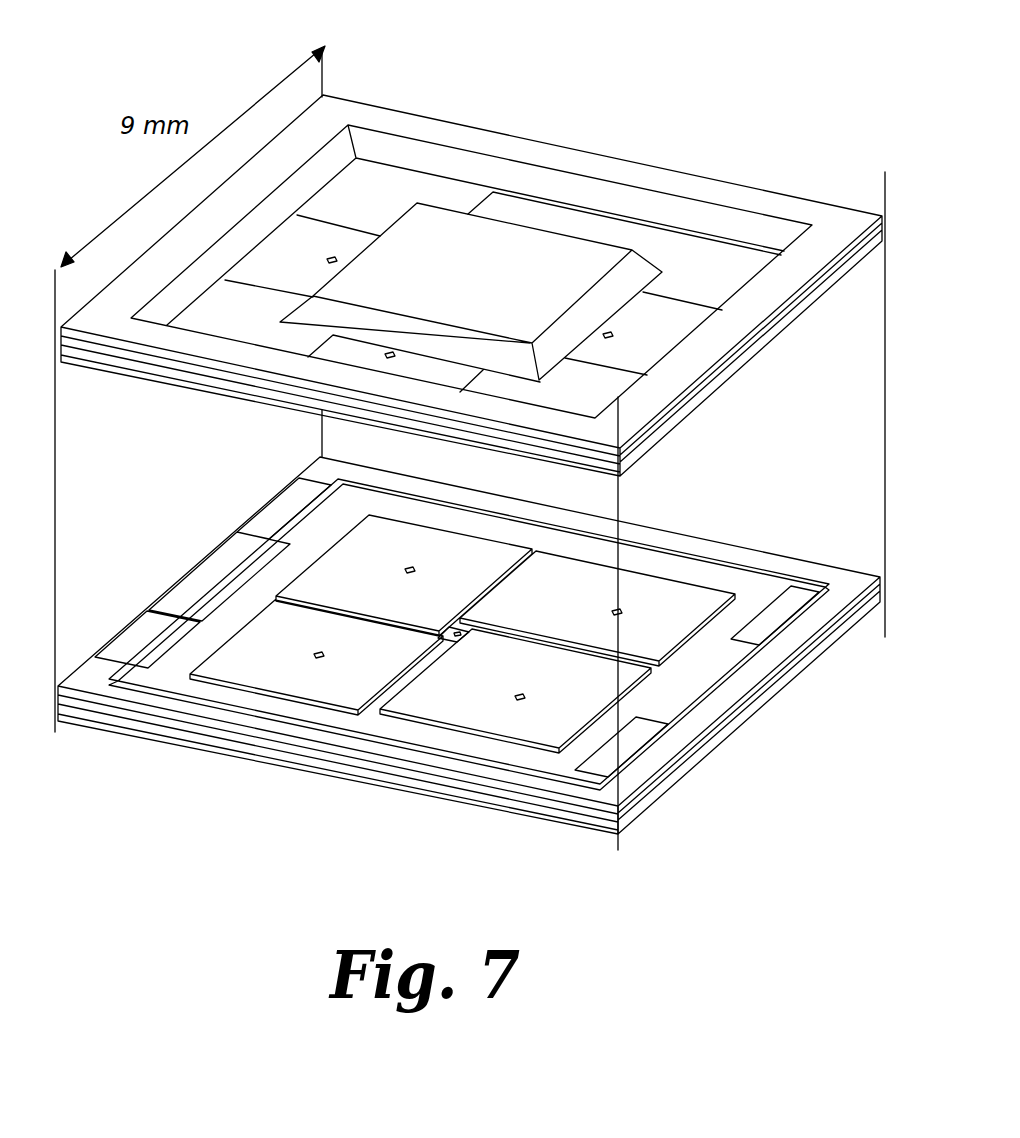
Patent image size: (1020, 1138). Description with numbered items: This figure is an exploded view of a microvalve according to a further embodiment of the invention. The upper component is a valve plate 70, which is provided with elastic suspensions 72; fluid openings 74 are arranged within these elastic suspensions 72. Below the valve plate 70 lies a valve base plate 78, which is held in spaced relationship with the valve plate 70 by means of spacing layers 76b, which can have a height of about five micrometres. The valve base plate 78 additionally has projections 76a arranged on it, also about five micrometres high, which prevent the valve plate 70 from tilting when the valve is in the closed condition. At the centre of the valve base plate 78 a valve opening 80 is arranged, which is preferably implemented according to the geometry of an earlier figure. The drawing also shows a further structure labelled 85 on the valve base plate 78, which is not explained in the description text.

The valve plate 70 is at (440, 250).
The elastic suspensions 72 is at (533, 213).
The fluid openings 74 is at (609, 333).
The projections 76a is at (192, 732).
The spacing layers 76b is at (657, 757).
The valve base plate 78 is at (797, 676).
The valve opening 80 is at (318, 656).
The conductive pads 85 is at (478, 738).